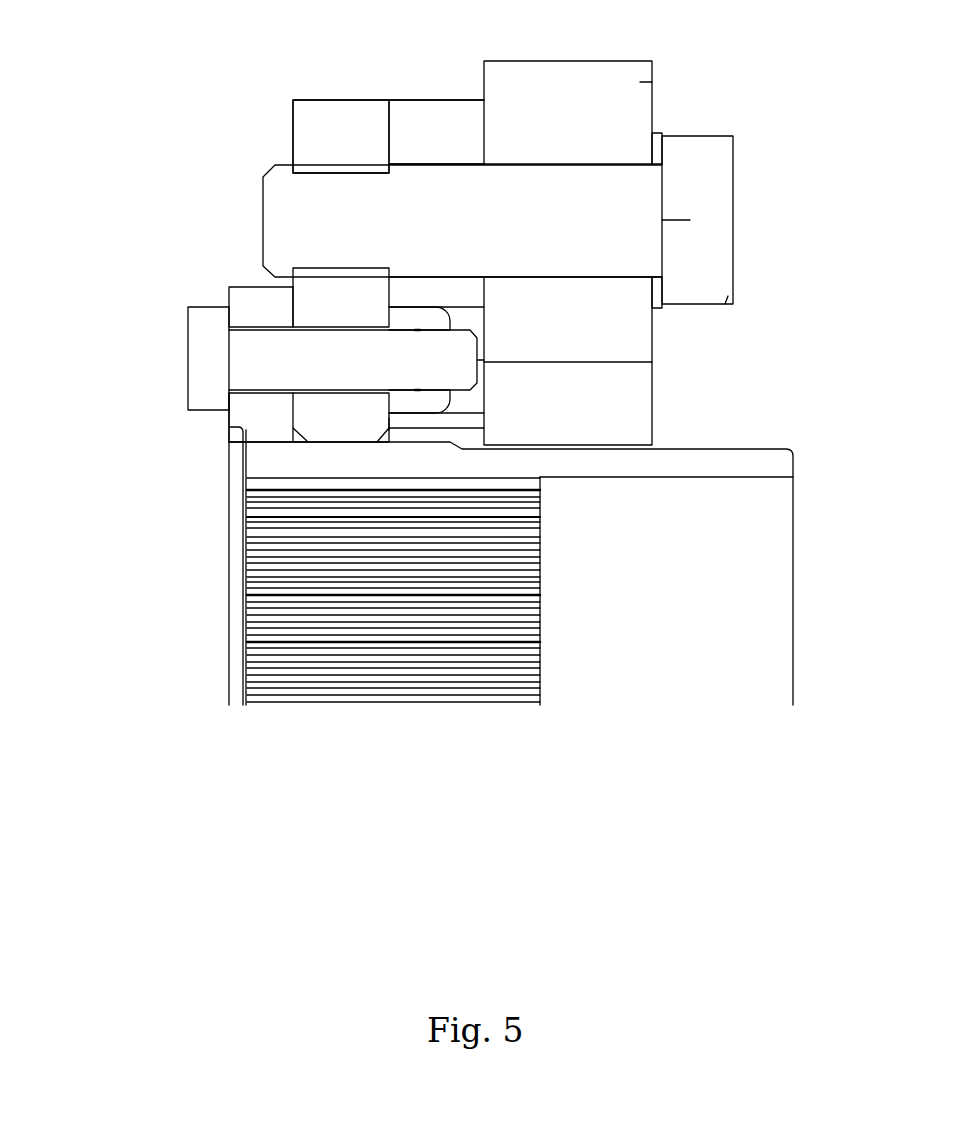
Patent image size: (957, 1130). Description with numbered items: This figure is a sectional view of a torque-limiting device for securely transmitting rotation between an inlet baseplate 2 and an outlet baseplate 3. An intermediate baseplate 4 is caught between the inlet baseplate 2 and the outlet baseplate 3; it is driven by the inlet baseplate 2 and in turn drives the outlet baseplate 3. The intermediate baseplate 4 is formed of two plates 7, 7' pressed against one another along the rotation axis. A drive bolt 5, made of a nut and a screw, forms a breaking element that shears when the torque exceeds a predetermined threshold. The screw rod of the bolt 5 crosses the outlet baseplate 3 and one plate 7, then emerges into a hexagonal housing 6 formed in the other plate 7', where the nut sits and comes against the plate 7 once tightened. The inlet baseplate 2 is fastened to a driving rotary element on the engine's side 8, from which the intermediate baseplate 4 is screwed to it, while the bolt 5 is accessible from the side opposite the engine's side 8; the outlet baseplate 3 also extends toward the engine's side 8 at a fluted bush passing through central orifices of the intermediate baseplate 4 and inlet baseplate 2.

The inlet baseplate 2 is at (590, 126).
The outlet baseplate 3 is at (250, 436).
The intermediate baseplate 4 is at (478, 83).
The drive bolt 5 is at (148, 352).
The hexagonal housing 6 is at (484, 400).
The plate 7 is at (289, 213).
The plate 7' is at (560, 168).
The engine's side 8 is at (849, 222).